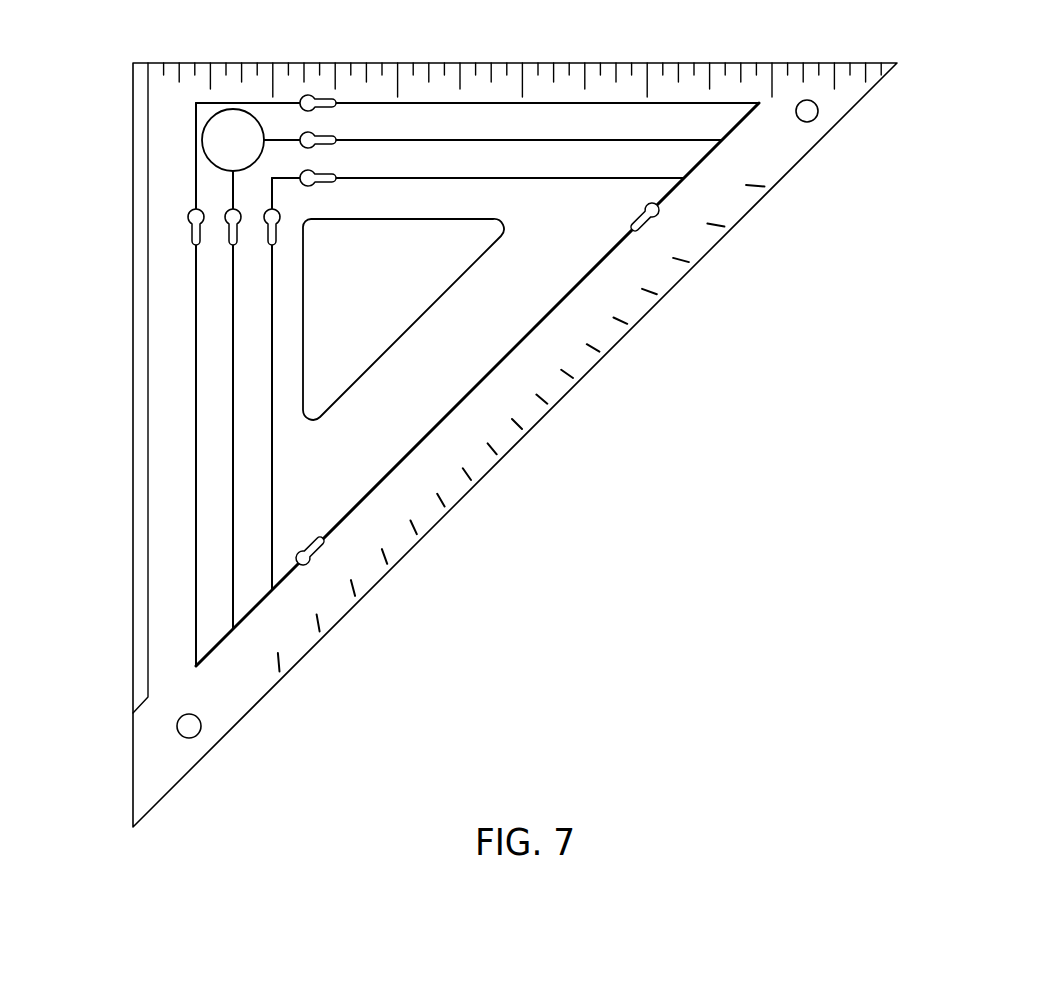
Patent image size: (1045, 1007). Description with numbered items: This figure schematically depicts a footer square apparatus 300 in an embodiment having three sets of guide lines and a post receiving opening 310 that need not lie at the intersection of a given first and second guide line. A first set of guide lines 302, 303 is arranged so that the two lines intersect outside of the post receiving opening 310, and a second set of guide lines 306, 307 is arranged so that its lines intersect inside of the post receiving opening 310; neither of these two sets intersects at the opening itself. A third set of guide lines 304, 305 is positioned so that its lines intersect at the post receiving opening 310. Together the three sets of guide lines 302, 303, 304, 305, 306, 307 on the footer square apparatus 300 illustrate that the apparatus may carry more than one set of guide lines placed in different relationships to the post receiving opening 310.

The footer square apparatus 300 is at (592, 460).
The guide line 302 is at (480, 102).
The guide line 303 is at (196, 490).
The guide line 304 is at (590, 143).
The guide line 305 is at (235, 451).
The guide line 306 is at (543, 182).
The guide line 307 is at (272, 295).
The post receiving opening 310 is at (248, 110).